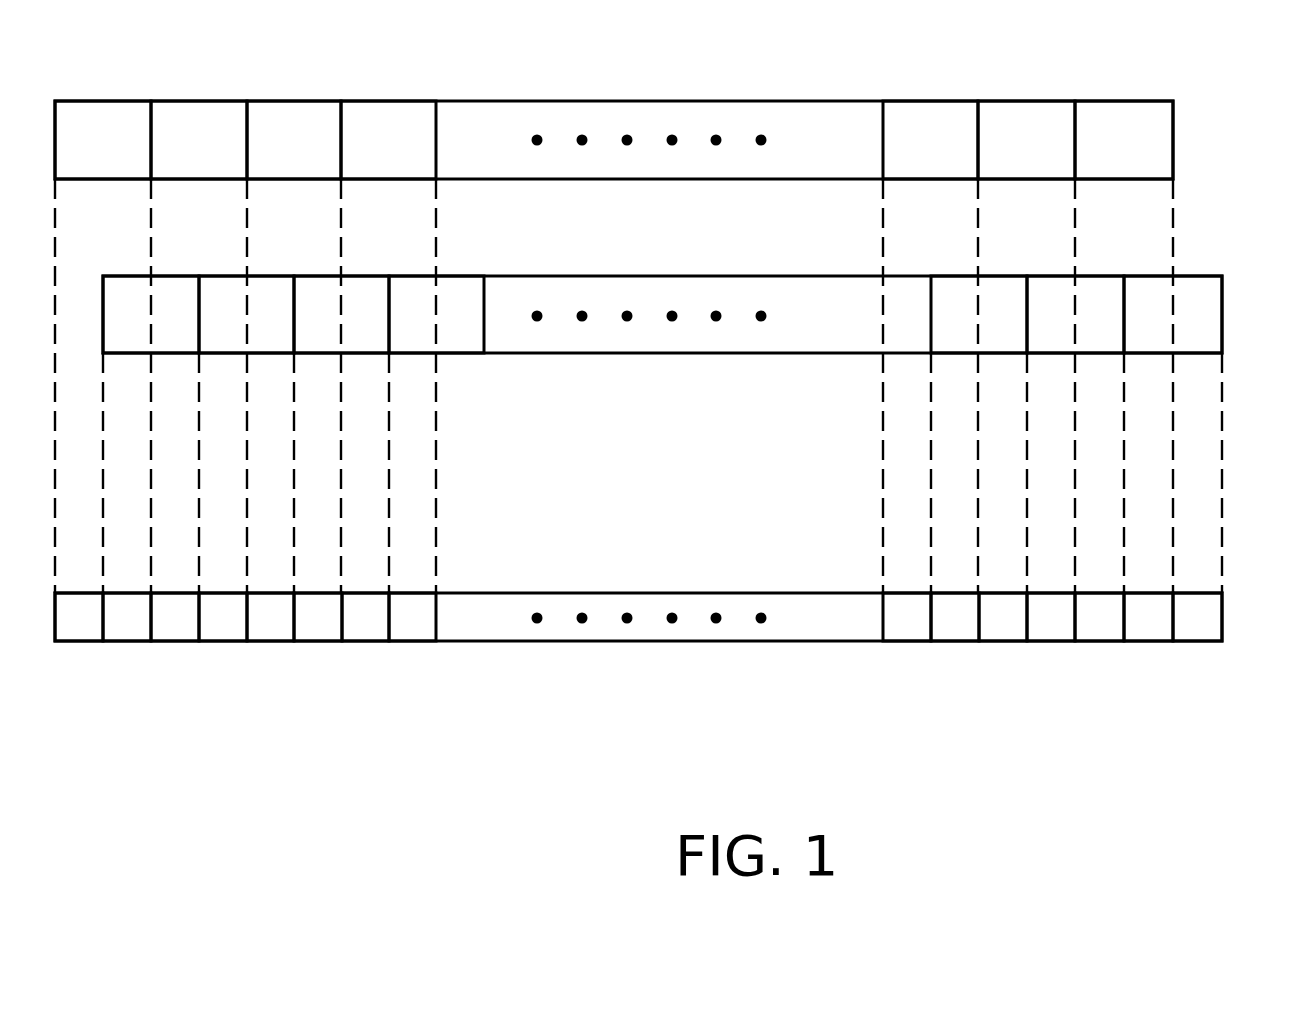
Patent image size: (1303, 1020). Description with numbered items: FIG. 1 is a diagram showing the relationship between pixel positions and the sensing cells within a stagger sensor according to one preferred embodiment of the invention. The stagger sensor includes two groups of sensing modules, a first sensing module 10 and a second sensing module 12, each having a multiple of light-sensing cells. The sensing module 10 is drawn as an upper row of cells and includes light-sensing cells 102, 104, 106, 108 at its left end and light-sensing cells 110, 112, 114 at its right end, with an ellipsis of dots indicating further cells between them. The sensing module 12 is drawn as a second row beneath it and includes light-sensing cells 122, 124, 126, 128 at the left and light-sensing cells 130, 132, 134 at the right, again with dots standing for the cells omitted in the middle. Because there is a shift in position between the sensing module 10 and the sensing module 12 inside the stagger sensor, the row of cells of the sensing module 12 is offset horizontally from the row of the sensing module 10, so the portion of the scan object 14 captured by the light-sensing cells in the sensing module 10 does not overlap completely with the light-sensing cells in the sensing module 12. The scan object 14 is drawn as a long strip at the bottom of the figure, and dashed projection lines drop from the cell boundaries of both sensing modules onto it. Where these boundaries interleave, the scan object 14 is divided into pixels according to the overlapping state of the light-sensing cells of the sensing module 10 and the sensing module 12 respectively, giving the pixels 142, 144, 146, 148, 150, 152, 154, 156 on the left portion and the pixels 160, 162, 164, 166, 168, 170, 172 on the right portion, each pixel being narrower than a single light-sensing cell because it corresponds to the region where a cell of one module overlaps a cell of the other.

The sensing module 10 is at (1177, 143).
The sensing module 12 is at (1225, 320).
The scan object 14 is at (1226, 613).
The light-sensing cell 102 is at (105, 108).
The light-sensing cell 104 is at (200, 108).
The light-sensing cell 106 is at (295, 108).
The light-sensing cell 108 is at (390, 108).
The light-sensing cell 110 is at (933, 108).
The light-sensing cell 112 is at (1027, 108).
The light-sensing cell 114 is at (1125, 108).
The light-sensing cell 122 is at (178, 285).
The light-sensing cell 124 is at (273, 285).
The light-sensing cell 126 is at (368, 285).
The light-sensing cell 128 is at (463, 285).
The light-sensing cell 130 is at (1007, 285).
The light-sensing cell 132 is at (1102, 285).
The light-sensing cell 134 is at (1200, 285).
The pixel 142 is at (79, 630).
The pixel 144 is at (127, 630).
The pixel 146 is at (175, 630).
The pixel 148 is at (223, 630).
The pixel 150 is at (270, 630).
The pixel 152 is at (318, 630).
The pixel 154 is at (365, 630).
The pixel 156 is at (412, 630).
The pixel 160 is at (907, 630).
The pixel 162 is at (955, 630).
The pixel 164 is at (1003, 630).
The pixel 166 is at (1051, 630).
The pixel 168 is at (1099, 630).
The pixel 170 is at (1148, 630).
The pixel 172 is at (1197, 630).